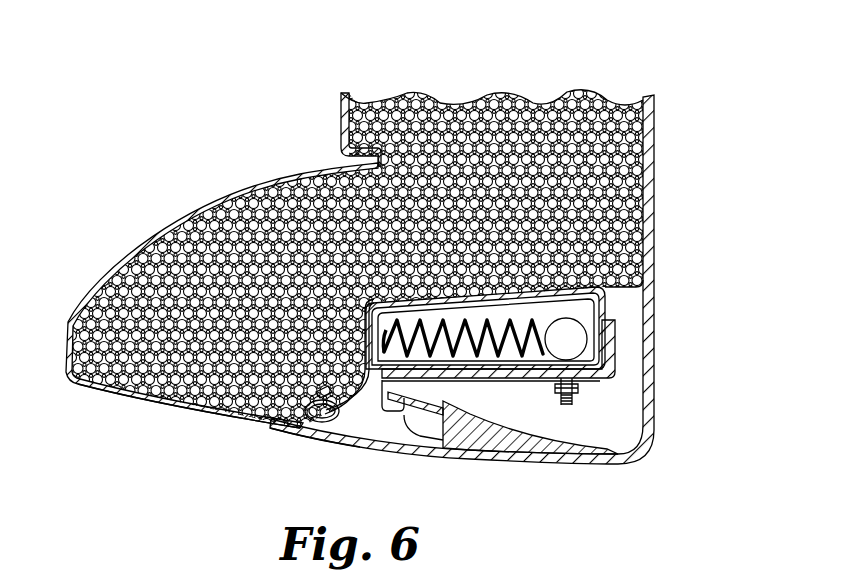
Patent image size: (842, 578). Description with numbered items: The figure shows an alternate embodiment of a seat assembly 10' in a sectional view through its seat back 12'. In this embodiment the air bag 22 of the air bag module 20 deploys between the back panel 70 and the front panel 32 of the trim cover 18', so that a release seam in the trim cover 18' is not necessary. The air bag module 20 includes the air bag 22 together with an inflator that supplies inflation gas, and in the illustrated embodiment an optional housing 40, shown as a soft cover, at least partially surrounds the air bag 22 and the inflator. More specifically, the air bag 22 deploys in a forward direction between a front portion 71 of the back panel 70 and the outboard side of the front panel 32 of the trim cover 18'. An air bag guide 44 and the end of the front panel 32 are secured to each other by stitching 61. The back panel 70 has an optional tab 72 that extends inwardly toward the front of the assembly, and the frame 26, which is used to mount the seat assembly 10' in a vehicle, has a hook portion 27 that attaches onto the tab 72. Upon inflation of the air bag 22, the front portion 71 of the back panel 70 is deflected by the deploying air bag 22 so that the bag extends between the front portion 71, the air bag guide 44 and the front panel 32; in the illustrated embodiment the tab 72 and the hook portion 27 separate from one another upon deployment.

The seat assembly 10' is at (402, 268).
The seat back 12' is at (360, 228).
The trim cover 18' is at (222, 292).
The air bag 22 is at (367, 300).
The air bag guide 44 is at (477, 286).
The housing 40 is at (540, 294).
The air bag module 20 is at (478, 358).
The back panel 70 is at (655, 307).
The front panel 32 is at (173, 412).
The stitching 61 is at (300, 427).
The front portion 71 is at (305, 438).
The hook portion 27 is at (374, 400).
The tab 72 is at (406, 410).
The frame 26 is at (508, 452).